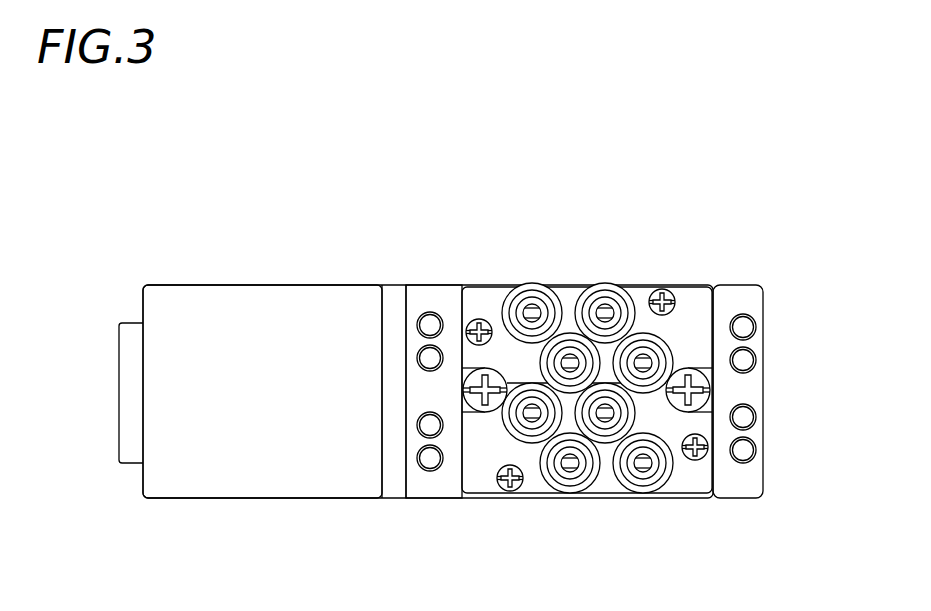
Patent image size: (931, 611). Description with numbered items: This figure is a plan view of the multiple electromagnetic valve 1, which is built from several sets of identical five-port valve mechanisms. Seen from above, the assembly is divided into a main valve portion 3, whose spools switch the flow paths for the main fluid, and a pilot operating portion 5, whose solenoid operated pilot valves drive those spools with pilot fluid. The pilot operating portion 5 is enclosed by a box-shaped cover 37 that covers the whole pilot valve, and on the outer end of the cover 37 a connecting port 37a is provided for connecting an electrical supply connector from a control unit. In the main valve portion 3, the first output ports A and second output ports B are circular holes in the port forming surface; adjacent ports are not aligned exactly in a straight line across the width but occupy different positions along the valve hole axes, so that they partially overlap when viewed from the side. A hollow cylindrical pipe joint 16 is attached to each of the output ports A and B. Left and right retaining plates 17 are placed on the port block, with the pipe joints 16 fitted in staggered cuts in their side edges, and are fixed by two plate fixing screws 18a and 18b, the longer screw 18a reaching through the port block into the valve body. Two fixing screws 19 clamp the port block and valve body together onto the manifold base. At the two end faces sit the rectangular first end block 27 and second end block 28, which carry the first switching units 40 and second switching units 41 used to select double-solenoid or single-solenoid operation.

The multiple electromagnetic valve 1 is at (471, 147).
The main valve portion 3 is at (718, 220).
The pilot operating portion 5 is at (222, 228).
The pipe joint 16 is at (545, 292).
The retaining plate 17 is at (700, 297).
The plate fixing screw 18a is at (663, 292).
The plate fixing screw 18b is at (478, 322).
The fixing screw 19 is at (472, 382).
The first end block 27 is at (420, 290).
The second end block 28 is at (748, 302).
The cover 37 is at (225, 473).
The connecting port 37a is at (130, 394).
The first switching unit 40 is at (430, 460).
The second switching unit 41 is at (745, 418).
The first output port A is at (532, 302).
The second output port B is at (606, 300).